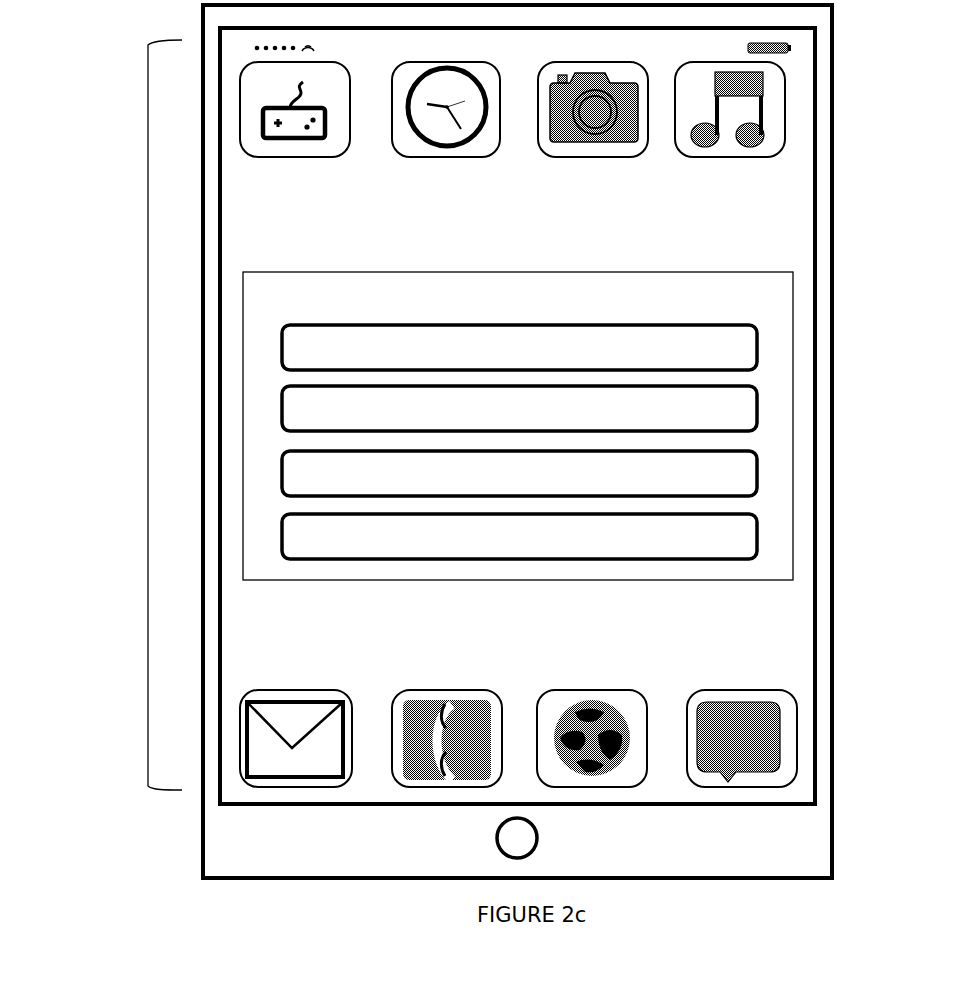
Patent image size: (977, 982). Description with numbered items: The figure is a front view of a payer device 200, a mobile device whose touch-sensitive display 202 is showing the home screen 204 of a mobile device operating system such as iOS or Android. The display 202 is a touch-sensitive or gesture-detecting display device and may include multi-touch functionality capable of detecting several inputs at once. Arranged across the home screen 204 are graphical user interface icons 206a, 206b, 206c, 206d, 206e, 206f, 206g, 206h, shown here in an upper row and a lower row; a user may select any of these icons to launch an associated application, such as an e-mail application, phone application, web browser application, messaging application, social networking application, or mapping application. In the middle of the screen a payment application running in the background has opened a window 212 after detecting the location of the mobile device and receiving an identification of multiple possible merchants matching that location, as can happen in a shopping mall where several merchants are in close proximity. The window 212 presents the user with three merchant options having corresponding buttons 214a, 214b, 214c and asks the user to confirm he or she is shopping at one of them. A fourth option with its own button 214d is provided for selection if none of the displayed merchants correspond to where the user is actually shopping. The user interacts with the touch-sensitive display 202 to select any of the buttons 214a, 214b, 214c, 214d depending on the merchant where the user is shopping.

The payer device 200 is at (203, 280).
The display 202 is at (220, 353).
The home screen 204 is at (148, 421).
The graphical user interface icon 206a is at (292, 688).
The graphical user interface icon 206b is at (445, 688).
The graphical user interface icon 206c is at (592, 688).
The graphical user interface icon 206d is at (741, 688).
The graphical user interface icon 206e is at (290, 163).
The graphical user interface icon 206f is at (441, 163).
The camera application icon 206g is at (588, 163).
The music application icon 206h is at (737, 163).
The window 212 is at (247, 513).
The button 214a is at (758, 363).
The button 214b is at (758, 420).
The button 214c is at (758, 472).
The button 214d is at (758, 533).